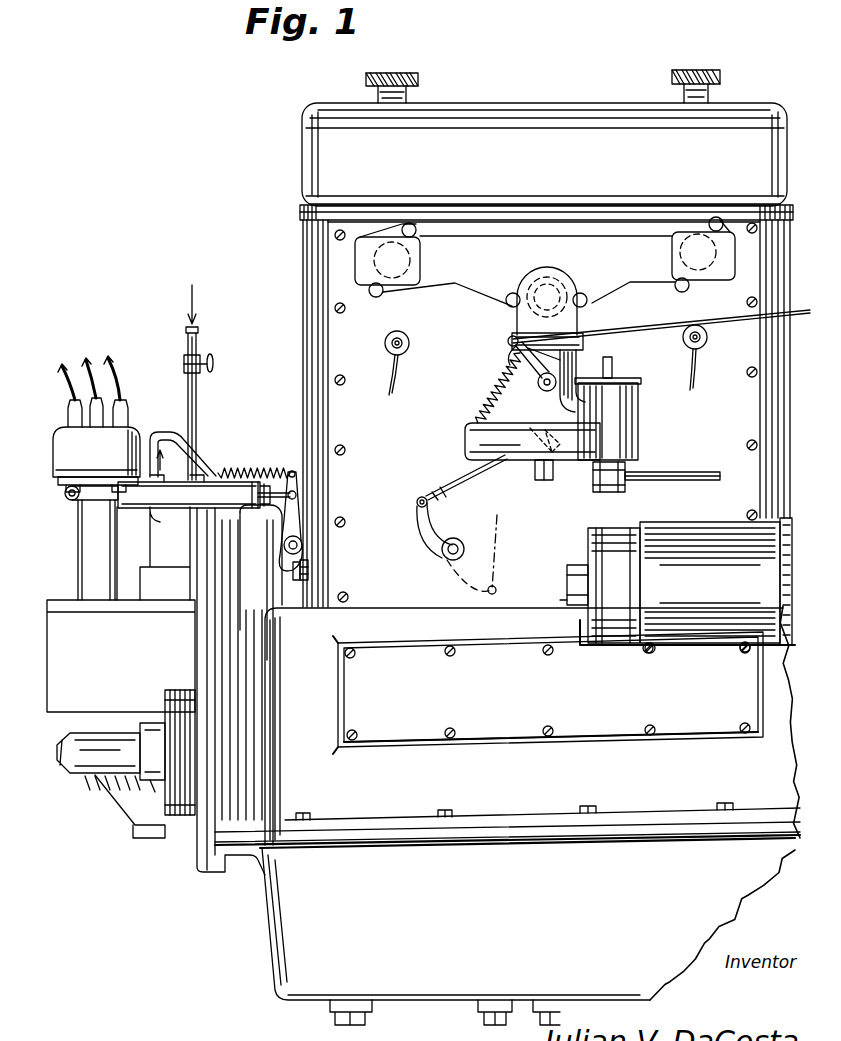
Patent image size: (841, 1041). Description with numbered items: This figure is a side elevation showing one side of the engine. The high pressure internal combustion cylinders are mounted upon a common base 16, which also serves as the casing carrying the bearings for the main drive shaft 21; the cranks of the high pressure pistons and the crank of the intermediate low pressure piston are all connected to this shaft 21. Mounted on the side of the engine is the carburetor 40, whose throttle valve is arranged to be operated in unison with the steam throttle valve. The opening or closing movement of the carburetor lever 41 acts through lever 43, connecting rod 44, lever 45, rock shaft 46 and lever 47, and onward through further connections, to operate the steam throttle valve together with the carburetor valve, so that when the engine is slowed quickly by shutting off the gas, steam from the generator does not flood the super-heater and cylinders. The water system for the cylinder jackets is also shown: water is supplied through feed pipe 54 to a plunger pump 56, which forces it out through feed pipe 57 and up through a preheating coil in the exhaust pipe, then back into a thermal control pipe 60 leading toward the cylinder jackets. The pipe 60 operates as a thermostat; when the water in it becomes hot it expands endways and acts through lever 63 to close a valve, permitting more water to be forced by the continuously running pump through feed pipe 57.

The common base 16 is at (300, 790).
The main drive shaft 21 is at (62, 772).
The carburetor 40 is at (640, 446).
The carburetor lever 41 is at (508, 341).
The lever 43 is at (575, 417).
The connecting rod 44 is at (468, 480).
The lever 45 is at (434, 542).
The rock shaft 46 is at (470, 536).
The lever 47 is at (465, 585).
The feed pipe 54 is at (198, 334).
The plunger pump 56 is at (252, 476).
The feed pipe 57 is at (198, 463).
The thermal control pipe 60 is at (310, 568).
The lever 63 is at (296, 512).